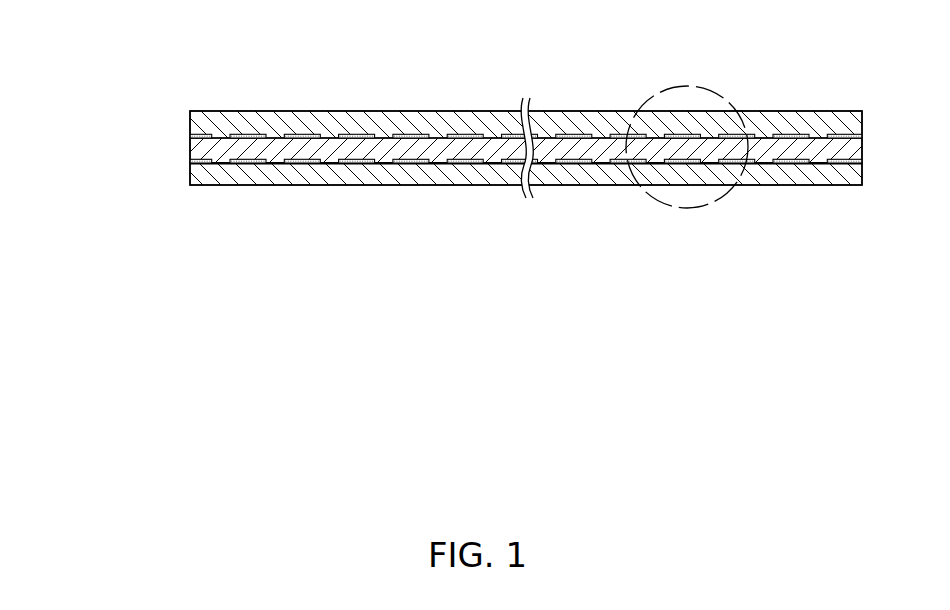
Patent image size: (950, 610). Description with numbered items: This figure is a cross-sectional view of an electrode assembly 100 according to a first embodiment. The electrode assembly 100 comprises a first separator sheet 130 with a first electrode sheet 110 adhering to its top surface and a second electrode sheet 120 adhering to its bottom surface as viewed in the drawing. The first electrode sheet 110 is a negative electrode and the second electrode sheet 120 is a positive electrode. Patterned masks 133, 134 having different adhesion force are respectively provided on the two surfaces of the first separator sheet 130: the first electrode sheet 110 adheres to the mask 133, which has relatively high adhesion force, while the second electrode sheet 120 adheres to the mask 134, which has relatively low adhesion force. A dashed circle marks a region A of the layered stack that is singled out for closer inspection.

The electrode assembly 100 is at (455, 149).
The first electrode sheet 110 is at (192, 124).
The second electrode sheet 120 is at (192, 173).
The first separator sheet 130 is at (192, 150).
The patterned mask 133 is at (275, 140).
The patterned mask 134 is at (275, 164).
The enlarged detail region A is at (684, 210).